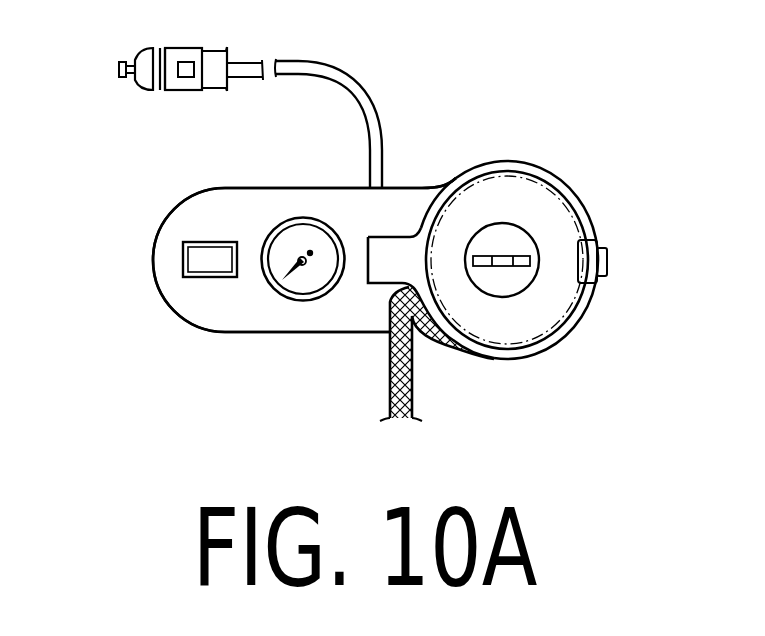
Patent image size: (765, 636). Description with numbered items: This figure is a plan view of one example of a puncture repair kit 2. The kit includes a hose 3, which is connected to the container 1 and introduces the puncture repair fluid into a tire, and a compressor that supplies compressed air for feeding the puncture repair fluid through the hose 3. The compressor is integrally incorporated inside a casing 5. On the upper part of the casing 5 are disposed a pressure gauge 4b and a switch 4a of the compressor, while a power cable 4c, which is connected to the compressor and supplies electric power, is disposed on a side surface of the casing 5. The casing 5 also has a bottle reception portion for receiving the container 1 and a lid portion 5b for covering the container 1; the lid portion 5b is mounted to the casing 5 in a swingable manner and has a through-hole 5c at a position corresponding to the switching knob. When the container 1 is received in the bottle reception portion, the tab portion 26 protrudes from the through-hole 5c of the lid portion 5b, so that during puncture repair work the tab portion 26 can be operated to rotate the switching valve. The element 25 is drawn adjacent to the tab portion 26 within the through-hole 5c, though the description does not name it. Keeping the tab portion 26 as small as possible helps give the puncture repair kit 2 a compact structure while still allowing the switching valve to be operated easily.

The container 1 is at (585, 207).
The puncture repair kit 2 is at (126, 198).
The hose 3 is at (388, 368).
The switch 4a is at (202, 260).
The pressure gauge 4b is at (275, 253).
The power cable 4c is at (302, 72).
The casing 5 is at (309, 176).
The lid portion 5b is at (553, 310).
The through-hole 5c is at (476, 236).
The slot 25 is at (513, 243).
The tab portion 26 is at (497, 254).